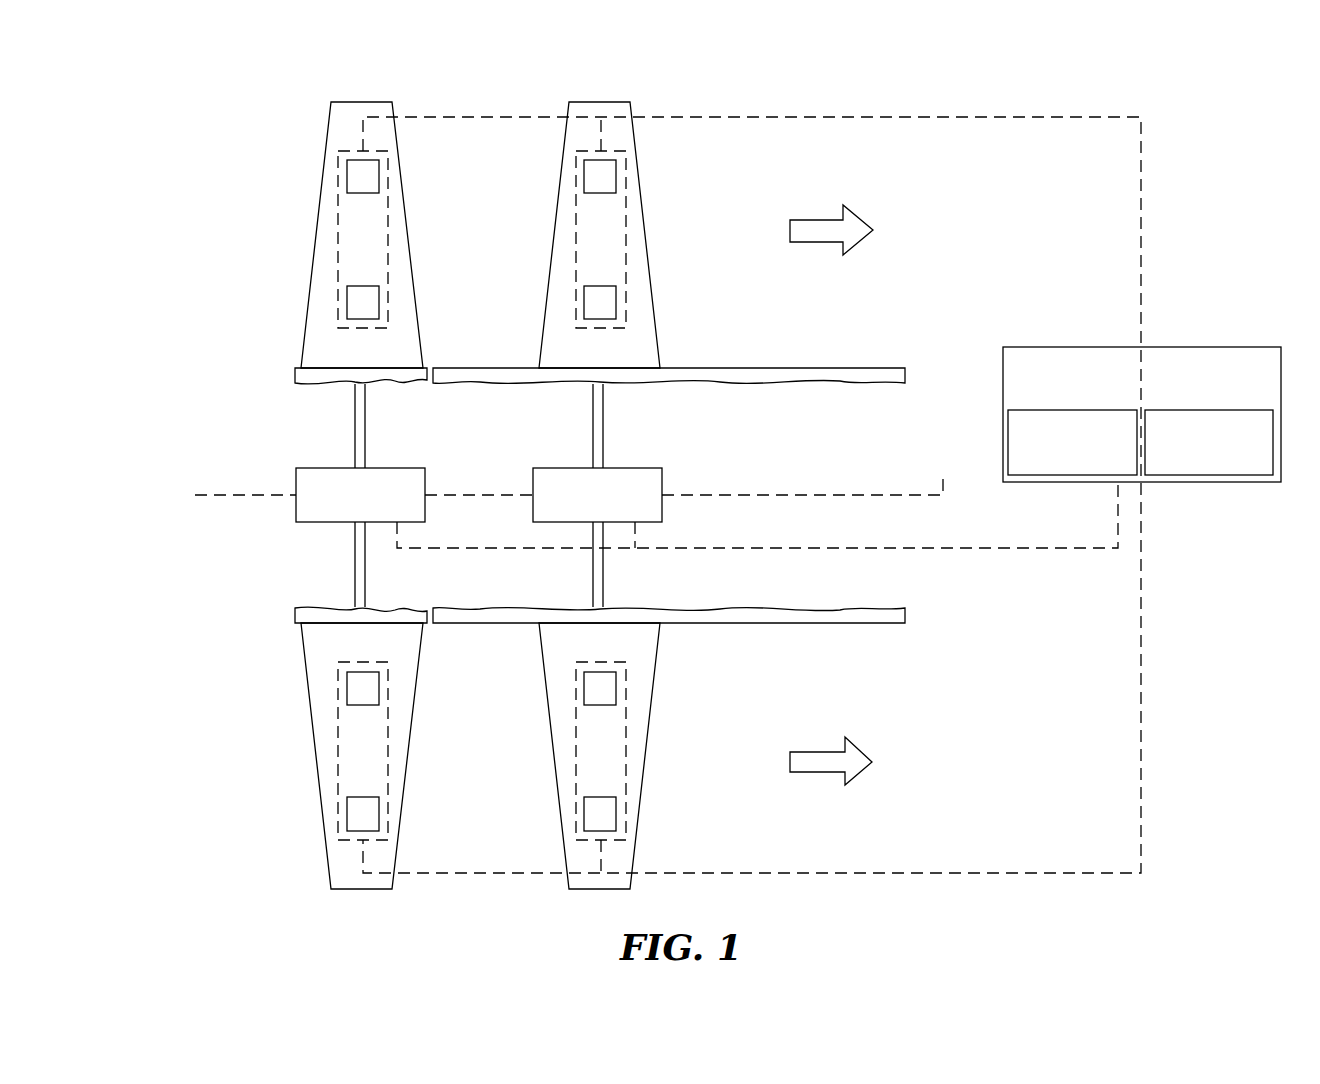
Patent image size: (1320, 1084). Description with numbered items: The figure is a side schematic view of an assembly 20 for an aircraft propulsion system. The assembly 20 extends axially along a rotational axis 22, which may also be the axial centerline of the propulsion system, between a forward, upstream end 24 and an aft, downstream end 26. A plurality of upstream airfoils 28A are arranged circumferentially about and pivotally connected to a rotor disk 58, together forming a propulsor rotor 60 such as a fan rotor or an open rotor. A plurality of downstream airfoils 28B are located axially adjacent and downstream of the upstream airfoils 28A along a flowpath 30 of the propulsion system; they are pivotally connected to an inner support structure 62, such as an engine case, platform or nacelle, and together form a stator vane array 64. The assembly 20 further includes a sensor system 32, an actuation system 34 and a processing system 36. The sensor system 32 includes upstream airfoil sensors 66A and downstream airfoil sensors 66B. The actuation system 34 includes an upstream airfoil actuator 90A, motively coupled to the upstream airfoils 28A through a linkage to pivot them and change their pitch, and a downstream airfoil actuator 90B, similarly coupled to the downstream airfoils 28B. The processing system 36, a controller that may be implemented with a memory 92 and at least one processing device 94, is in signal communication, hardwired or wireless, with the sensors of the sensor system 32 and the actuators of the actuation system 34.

The propulsion system assembly 20 is at (203, 100).
The rotational axis 22 is at (943, 477).
The forward, upstream end 24 is at (296, 372).
The aft, downstream end 26 is at (905, 374).
The upstream airfoils 28A is at (312, 250).
The downstream airfoils 28B is at (652, 230).
The flowpath 30 is at (463, 235).
The sensor system 32 is at (330, 170).
The actuation system 34 is at (268, 543).
The processing system 36 is at (1222, 345).
The rotor disk 58 is at (298, 392).
The propulsor rotor 60 is at (305, 890).
The inner support structure 62 is at (850, 392).
The stator vane array 64 is at (655, 90).
The upstream airfoil sensors 66A is at (379, 175).
The downstream airfoil sensors 66B is at (584, 175).
The upstream airfoil actuator 90A is at (425, 478).
The downstream airfoil actuator 90B is at (662, 478).
The memory 92 is at (1193, 478).
The processing device 94 is at (1063, 480).